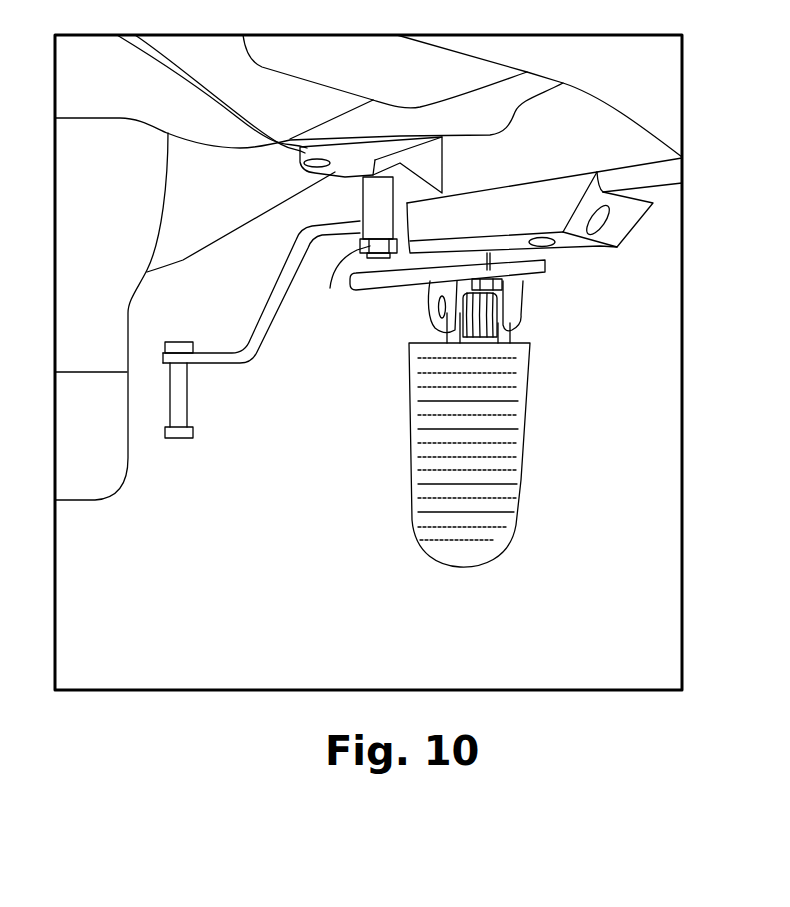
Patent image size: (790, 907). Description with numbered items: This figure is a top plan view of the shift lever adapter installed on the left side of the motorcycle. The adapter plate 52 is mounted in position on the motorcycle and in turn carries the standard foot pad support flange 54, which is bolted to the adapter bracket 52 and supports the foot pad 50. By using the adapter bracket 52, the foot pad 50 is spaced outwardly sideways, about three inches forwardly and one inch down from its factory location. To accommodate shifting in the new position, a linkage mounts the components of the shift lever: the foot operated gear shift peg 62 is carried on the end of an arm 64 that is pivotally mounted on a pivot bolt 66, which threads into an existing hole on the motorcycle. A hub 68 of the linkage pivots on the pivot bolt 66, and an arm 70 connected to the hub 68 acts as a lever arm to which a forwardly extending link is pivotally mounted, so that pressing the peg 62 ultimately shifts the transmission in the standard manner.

The foot pad 50 is at (495, 435).
The adapter plate 52 is at (552, 210).
The foot pad support flange 54 is at (397, 279).
The gear shift peg 62 is at (178, 393).
The arm 64 is at (290, 303).
The pivot bolt 66 is at (343, 280).
The hub 68 is at (372, 198).
The arm 70 is at (398, 161).